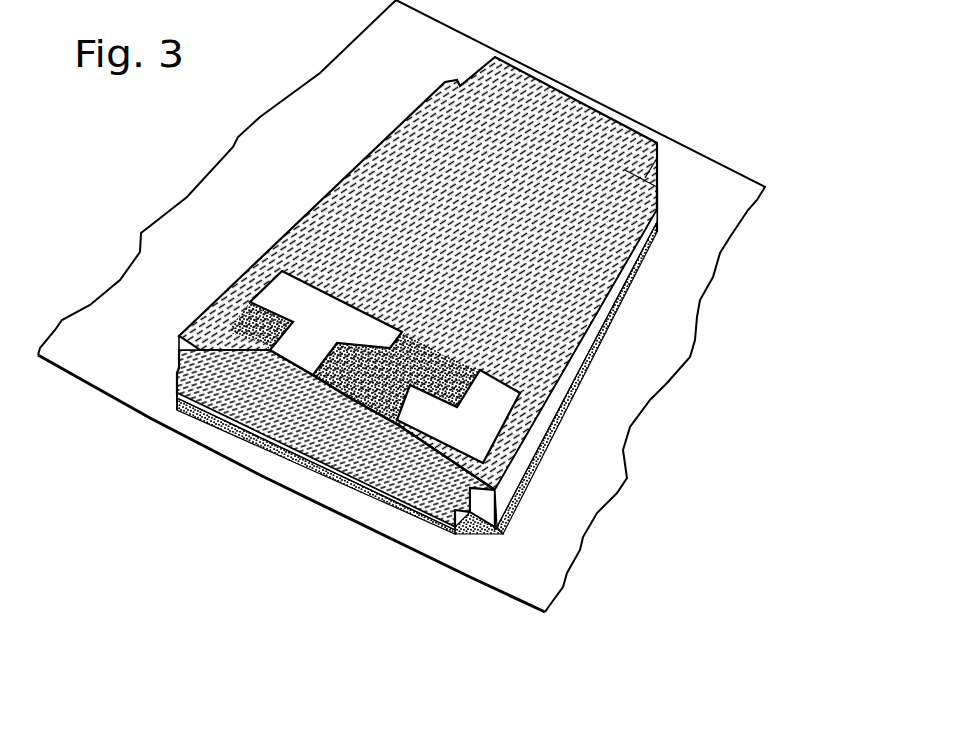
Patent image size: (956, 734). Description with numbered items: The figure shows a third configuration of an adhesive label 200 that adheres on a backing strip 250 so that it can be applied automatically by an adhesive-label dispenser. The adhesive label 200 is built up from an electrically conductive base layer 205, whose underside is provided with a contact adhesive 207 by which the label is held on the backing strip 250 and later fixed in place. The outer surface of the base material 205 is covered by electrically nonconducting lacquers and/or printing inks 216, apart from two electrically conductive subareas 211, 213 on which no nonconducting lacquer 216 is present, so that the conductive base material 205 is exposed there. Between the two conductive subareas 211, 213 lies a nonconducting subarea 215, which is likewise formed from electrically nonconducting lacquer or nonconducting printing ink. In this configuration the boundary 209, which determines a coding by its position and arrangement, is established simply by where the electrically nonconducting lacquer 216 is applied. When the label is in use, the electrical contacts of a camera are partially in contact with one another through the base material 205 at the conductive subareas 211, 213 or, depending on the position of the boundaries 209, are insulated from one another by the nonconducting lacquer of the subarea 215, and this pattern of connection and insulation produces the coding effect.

The adhesive label 200 is at (472, 302).
The electrically conductive base layer 205 is at (620, 275).
The contact adhesive 207 is at (580, 360).
The boundary 209 is at (291, 360).
The electrically conductive subarea 211 is at (480, 433).
The electrically conductive subarea 213 is at (282, 297).
The nonconducting subarea 215 is at (345, 395).
The electrically nonconducting lacquer 216 is at (390, 183).
The backing strip 250 is at (557, 553).